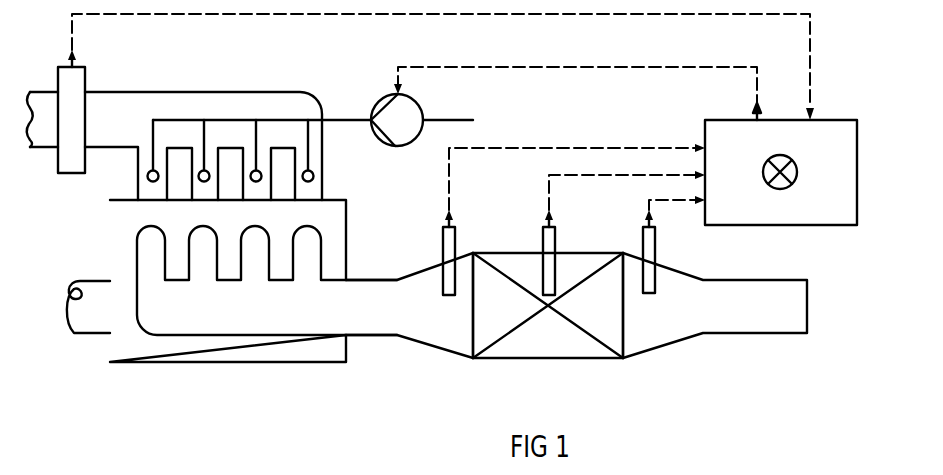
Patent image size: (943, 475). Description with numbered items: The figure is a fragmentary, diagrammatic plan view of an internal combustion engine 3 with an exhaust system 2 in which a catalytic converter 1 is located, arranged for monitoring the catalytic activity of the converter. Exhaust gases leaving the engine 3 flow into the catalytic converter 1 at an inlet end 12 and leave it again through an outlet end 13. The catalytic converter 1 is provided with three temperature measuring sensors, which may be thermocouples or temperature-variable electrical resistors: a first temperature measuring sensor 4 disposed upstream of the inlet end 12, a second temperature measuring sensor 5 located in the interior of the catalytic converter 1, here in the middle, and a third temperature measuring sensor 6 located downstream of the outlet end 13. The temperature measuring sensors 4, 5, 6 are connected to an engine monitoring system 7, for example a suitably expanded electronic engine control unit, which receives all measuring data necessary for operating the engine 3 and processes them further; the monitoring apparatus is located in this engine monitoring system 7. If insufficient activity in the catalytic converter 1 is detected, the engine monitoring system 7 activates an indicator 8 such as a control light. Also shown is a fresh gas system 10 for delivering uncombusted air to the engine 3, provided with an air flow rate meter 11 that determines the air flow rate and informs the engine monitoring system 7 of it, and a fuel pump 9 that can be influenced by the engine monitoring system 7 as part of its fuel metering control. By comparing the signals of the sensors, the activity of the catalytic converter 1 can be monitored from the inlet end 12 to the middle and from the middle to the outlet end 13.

The catalytic converter 1 is at (538, 347).
The exhaust system 2 is at (372, 337).
The internal combustion engine 3 is at (202, 362).
The first temperature measuring sensor 4 is at (440, 240).
The second temperature measuring sensor 5 is at (540, 240).
The third temperature measuring sensor 6 is at (640, 240).
The engine monitoring system 7 is at (857, 142).
The indicator 8 is at (797, 170).
The fuel pump 9 is at (388, 93).
The fresh gas system 10 is at (135, 91).
The air flow rate meter 11 is at (70, 174).
The inlet end 12 is at (472, 333).
The outlet end 13 is at (627, 323).